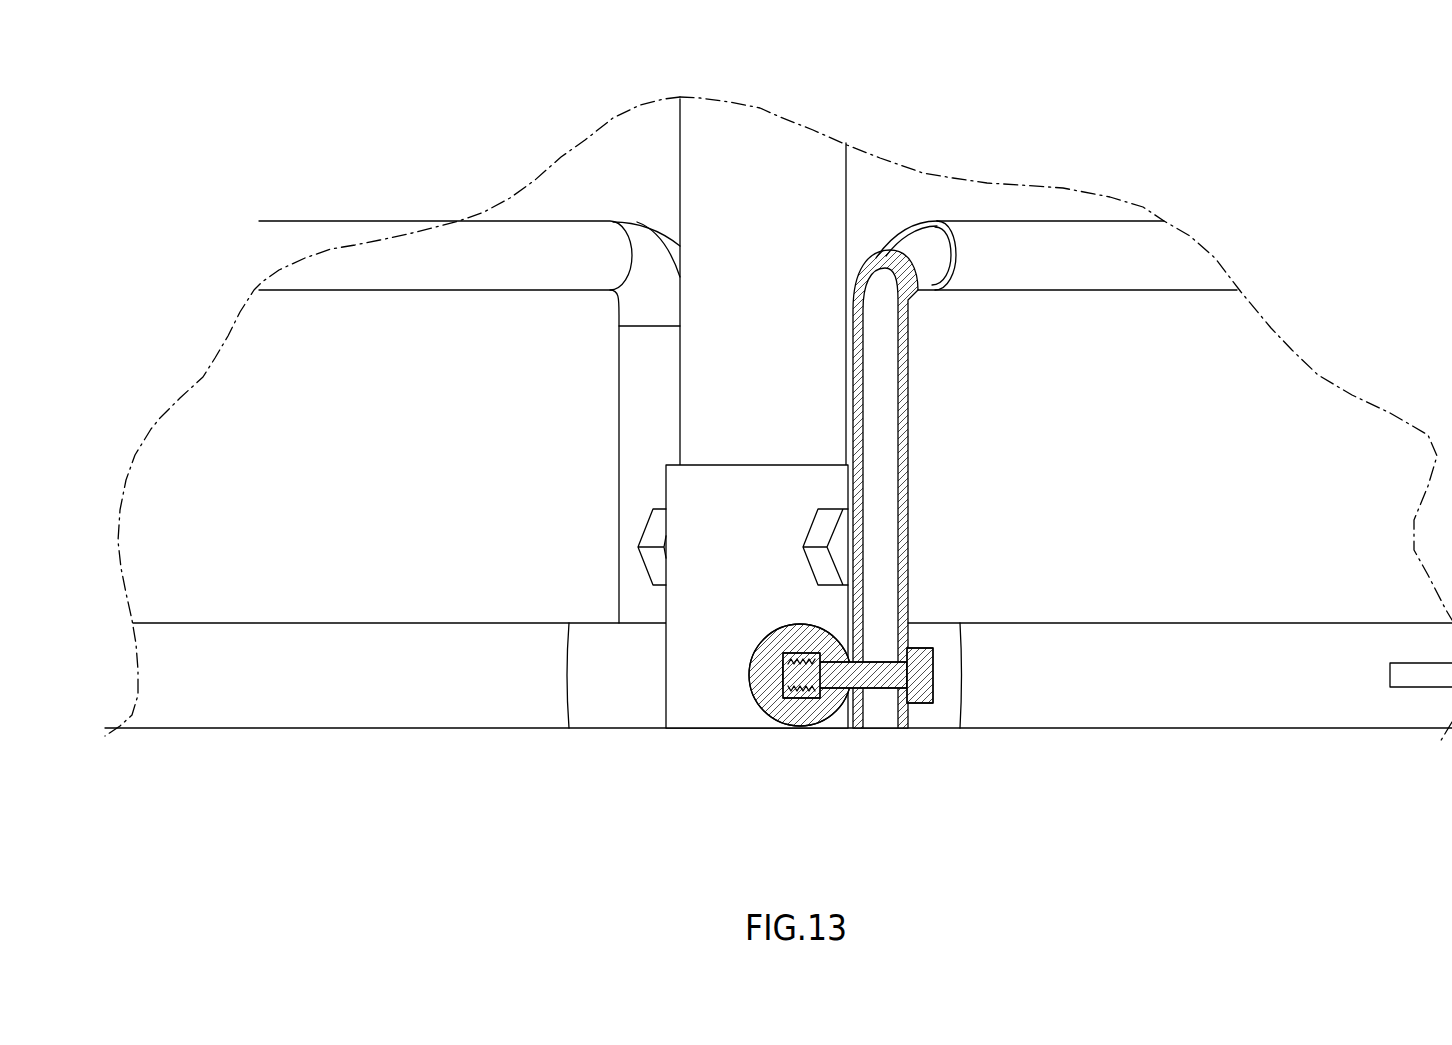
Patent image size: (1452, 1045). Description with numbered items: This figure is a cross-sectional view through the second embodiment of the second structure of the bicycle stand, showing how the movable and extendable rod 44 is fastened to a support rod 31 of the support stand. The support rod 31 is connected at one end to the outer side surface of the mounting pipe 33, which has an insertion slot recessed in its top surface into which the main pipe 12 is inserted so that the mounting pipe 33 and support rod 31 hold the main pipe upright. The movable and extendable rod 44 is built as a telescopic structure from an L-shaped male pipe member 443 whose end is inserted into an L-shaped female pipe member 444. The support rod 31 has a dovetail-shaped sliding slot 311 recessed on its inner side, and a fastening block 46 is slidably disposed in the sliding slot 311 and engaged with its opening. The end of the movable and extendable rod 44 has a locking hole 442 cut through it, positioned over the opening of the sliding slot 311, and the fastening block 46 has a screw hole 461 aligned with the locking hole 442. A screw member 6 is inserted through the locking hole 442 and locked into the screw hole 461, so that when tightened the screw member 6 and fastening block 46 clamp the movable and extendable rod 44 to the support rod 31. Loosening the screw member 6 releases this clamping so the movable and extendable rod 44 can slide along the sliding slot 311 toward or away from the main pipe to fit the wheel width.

The frame column 12 is at (800, 193).
The movable and extendable rod 44 is at (1045, 378).
The male pipe member 443 is at (870, 255).
The female pipe member 444 is at (970, 78).
The screw member 6 is at (920, 647).
The support rod 31 is at (1134, 646).
The mounting pipe 33 is at (713, 717).
The fastening block 46 is at (795, 697).
The screw hole 461 is at (787, 683).
The sliding slot 311 is at (813, 700).
The locking hole 442 is at (861, 688).